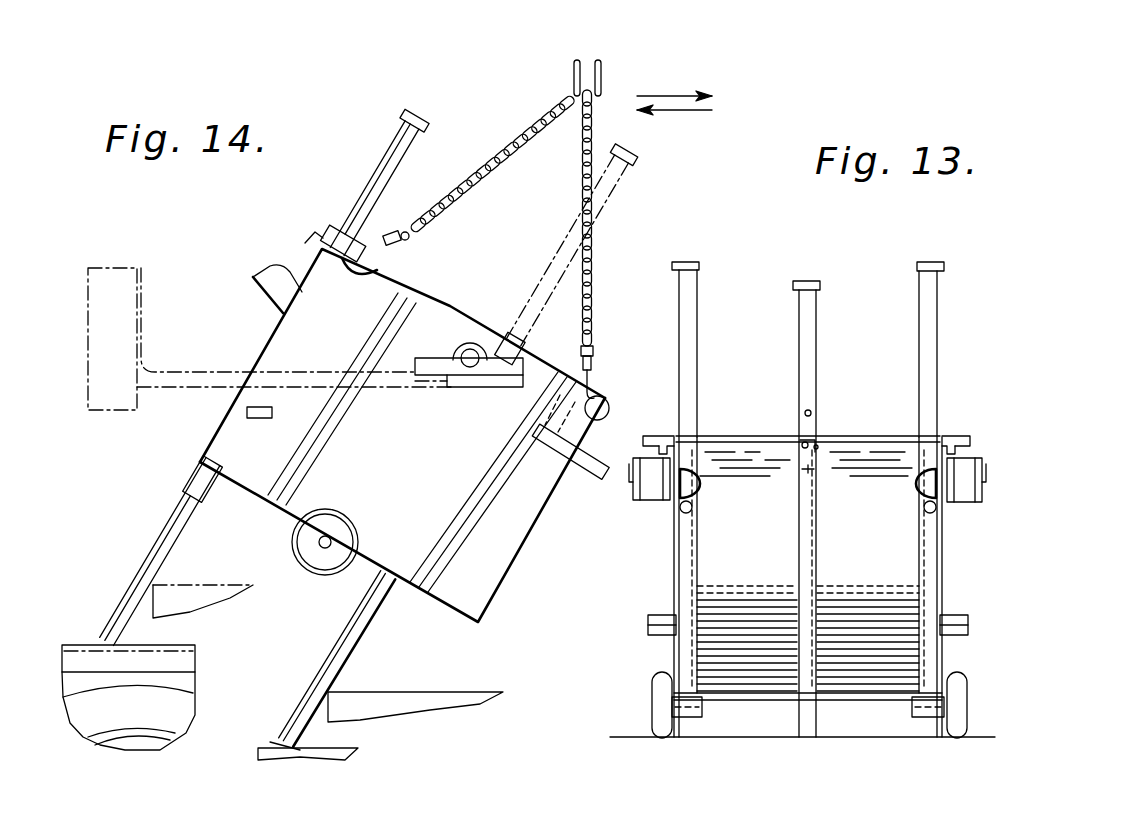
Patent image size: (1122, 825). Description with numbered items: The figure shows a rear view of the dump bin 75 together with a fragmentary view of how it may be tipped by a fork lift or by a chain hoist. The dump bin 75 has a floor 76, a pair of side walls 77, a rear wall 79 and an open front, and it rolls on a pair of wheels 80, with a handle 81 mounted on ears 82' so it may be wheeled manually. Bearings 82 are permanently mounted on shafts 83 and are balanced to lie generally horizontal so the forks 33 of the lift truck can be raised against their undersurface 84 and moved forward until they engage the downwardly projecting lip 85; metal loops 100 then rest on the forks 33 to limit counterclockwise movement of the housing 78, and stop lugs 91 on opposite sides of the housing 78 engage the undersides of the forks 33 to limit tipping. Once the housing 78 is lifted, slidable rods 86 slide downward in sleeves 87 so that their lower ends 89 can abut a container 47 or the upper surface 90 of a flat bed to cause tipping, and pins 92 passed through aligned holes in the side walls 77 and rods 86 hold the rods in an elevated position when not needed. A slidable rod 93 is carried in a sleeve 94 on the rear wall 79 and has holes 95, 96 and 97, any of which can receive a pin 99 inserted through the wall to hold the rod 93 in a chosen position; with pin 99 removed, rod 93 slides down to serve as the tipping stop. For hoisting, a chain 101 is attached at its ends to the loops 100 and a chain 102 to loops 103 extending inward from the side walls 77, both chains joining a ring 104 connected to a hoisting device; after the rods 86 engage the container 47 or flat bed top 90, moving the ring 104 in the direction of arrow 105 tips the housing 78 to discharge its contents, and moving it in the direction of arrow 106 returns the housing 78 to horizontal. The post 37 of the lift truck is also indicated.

In FIG. 14, the forks 33 is at (190, 368).
In FIG. 14, the support post 37 is at (80, 265).
In FIG. 14, the container 47 is at (210, 583).
In FIG. 14, the dump bin 75 is at (455, 290).
In FIG. 13, the dump bin 75 is at (866, 400).
In FIG. 13, the floor 76 is at (830, 680).
In FIG. 14, the side walls 77 is at (393, 451).
In FIG. 13, the side walls 77 is at (673, 562).
In FIG. 14, the housing 78 is at (506, 572).
In FIG. 13, the housing 78 is at (673, 588).
In FIG. 13, the rear wall 79 is at (758, 435).
In FIG. 14, the wheels 80 is at (316, 569).
In FIG. 13, the wheels 80 is at (652, 692).
In FIG. 14, the handle 81 is at (270, 250).
In FIG. 14, the bearings 82 is at (452, 340).
In FIG. 13, the bearings 82 is at (806, 507).
In FIG. 14, the ears 82' is at (246, 295).
In FIG. 14, the shafts 83 is at (480, 343).
In FIG. 13, the shafts 83 is at (633, 494).
In FIG. 14, the undersurface 84 is at (445, 386).
In FIG. 14, the downwardly projecting lip 85 is at (513, 393).
In FIG. 14, the slidable rods 86 is at (630, 192).
In FIG. 13, the slidable rods 86 is at (694, 326).
In FIG. 13, the sleeves 87 is at (700, 542).
In FIG. 14, the lower ends 89 is at (280, 745).
In FIG. 13, the lower ends 89 is at (808, 707).
In FIG. 14, the upper surface 90 is at (90, 645).
In FIG. 14, the stop lugs 91 is at (259, 419).
In FIG. 13, the stop lugs 91 is at (648, 622).
In FIG. 14, the pins 92 is at (528, 352).
In FIG. 13, the pins 92 is at (668, 436).
In FIG. 14, the slidable rod 93 is at (388, 160).
In FIG. 13, the slidable rod 93 is at (797, 298).
In FIG. 13, the sleeve 94 is at (796, 558).
In FIG. 13, the hole 95 is at (812, 413).
In FIG. 13, the hole 96 is at (820, 449).
In FIG. 13, the hole 97 is at (818, 471).
In FIG. 14, the pin 99 is at (335, 238).
In FIG. 13, the pin 99 is at (802, 446).
In FIG. 14, the metal loops 100 is at (332, 258).
In FIG. 13, the metal loops 100 is at (645, 436).
In FIG. 14, the chain 101 is at (485, 187).
In FIG. 14, the chain 102 is at (597, 262).
In FIG. 14, the loops 103 is at (548, 452).
In FIG. 13, the loops 103 is at (705, 495).
In FIG. 14, the ring 104 is at (568, 77).
In FIG. 14, the arrow 105 is at (657, 92).
In FIG. 14, the arrow 106 is at (678, 114).